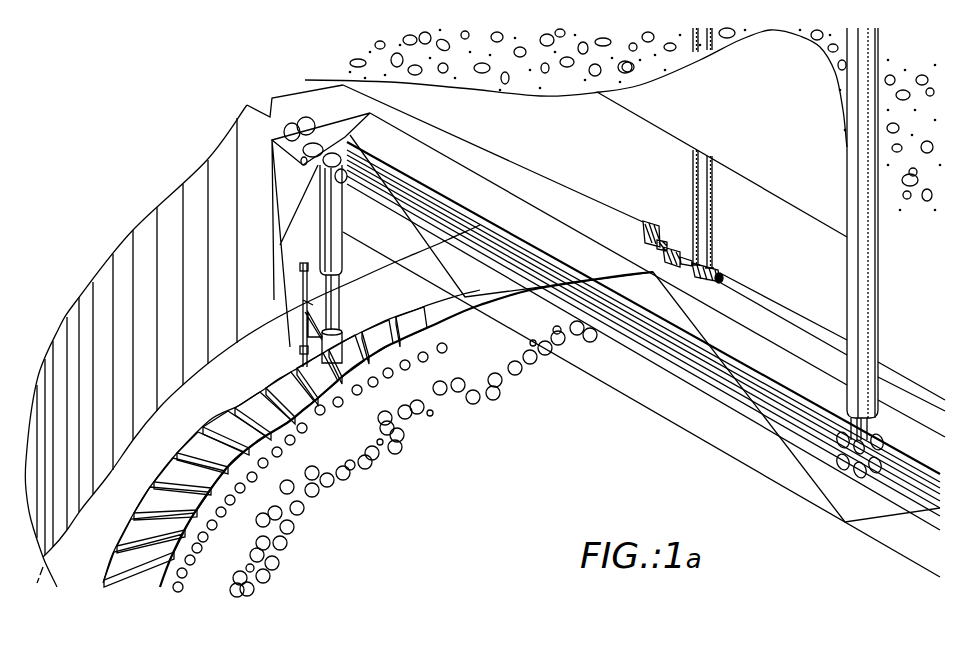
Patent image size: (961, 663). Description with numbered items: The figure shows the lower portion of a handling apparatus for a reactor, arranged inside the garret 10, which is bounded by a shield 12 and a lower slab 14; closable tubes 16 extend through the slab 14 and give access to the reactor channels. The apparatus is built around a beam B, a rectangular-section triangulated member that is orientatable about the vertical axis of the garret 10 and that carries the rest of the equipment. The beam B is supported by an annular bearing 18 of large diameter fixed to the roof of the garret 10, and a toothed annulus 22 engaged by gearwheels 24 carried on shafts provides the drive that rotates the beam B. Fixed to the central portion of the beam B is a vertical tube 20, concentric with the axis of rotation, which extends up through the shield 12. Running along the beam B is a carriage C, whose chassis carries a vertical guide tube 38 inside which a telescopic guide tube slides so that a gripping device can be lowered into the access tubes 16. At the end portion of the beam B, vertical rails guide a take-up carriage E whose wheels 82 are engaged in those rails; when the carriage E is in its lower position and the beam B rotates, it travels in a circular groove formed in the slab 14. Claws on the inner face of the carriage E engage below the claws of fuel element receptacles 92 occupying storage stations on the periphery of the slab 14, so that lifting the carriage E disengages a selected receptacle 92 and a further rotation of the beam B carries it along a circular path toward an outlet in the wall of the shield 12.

The garret 10 is at (592, 160).
The shield 12 is at (778, 132).
The lower slab 14 is at (482, 528).
The closable tubes 16 is at (476, 403).
The annular bearing 18 is at (644, 222).
The vertical tube 20 is at (880, 60).
The toothed annulus 22 is at (666, 246).
The gearwheels 24 is at (720, 274).
The vertical guide tube 38 is at (320, 232).
The wheels 82 is at (300, 267).
The fuel element receptacle 92 is at (344, 375).
The beam B is at (765, 336).
The carriage C is at (350, 137).
The take-up carriage E is at (301, 298).